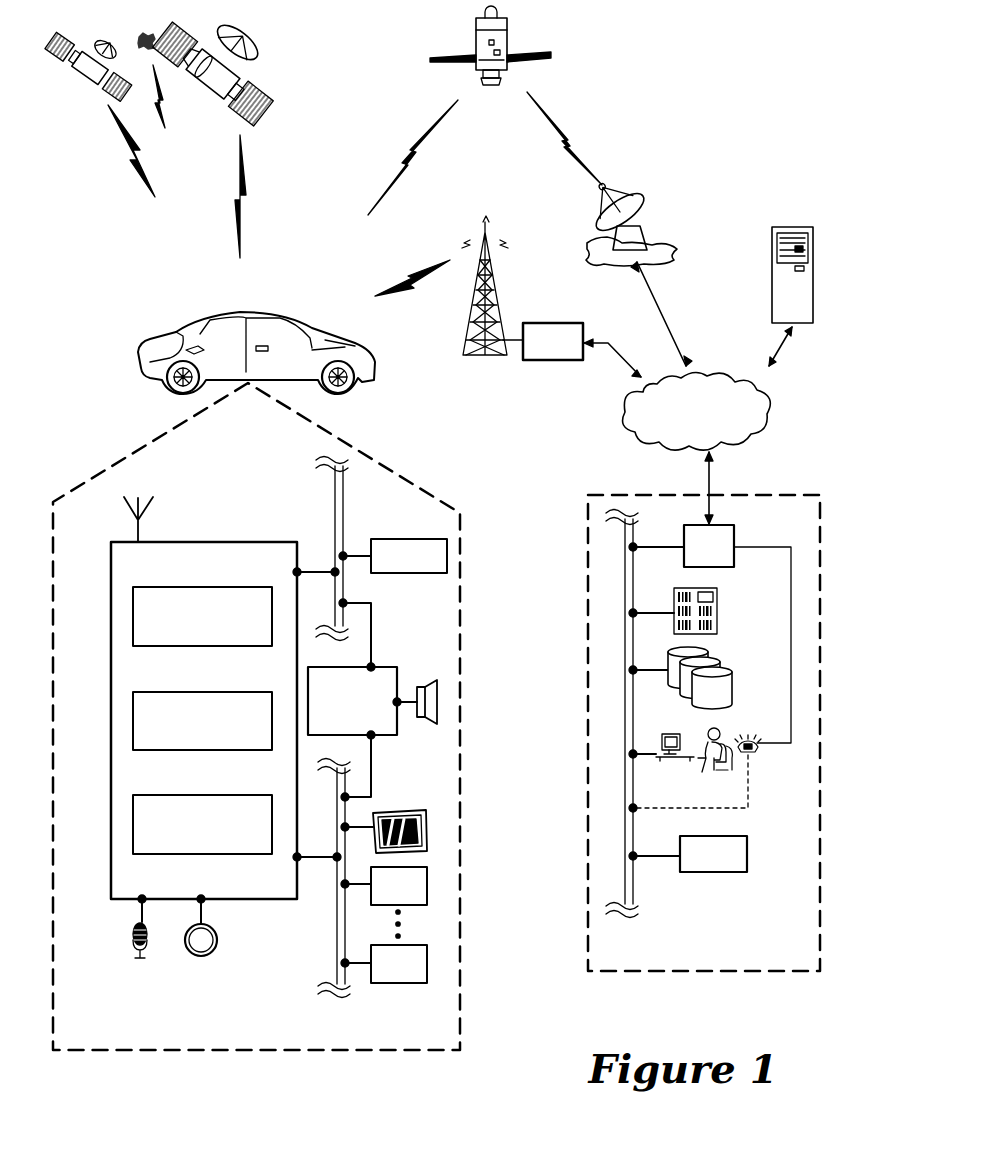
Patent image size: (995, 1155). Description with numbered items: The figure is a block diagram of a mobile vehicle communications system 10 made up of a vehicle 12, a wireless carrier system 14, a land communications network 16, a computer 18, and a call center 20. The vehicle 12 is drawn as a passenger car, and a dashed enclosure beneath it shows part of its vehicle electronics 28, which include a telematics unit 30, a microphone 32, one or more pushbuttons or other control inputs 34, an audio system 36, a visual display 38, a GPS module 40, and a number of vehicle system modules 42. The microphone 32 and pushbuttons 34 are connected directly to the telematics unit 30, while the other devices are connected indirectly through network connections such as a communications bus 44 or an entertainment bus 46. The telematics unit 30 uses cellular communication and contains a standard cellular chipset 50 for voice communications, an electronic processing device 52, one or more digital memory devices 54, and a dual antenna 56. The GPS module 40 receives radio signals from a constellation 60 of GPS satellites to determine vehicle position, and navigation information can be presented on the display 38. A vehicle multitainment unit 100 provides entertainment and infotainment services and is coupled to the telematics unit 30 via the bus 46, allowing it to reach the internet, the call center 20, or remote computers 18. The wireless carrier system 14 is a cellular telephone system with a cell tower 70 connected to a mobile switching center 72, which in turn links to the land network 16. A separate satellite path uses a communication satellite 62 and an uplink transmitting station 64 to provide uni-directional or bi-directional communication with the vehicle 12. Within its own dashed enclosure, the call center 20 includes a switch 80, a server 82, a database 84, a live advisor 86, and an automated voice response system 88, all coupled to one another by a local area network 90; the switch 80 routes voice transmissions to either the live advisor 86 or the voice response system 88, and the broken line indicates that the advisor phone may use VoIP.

The mobile vehicle communications system 10 is at (727, 46).
The vehicle 12 is at (140, 362).
The wireless carrier system 14 is at (486, 374).
The land communications network 16 is at (697, 411).
The computer 18 is at (813, 286).
The call center 20 is at (693, 971).
The vehicle electronics 28 is at (250, 1050).
The telematics unit 30 is at (204, 701).
The microphone 32 is at (131, 938).
The pushbuttons or other control inputs 34 is at (218, 937).
The audio system 36 is at (372, 701).
The visual display 38 is at (398, 811).
The GPS module 40 is at (384, 886).
The vehicle system modules 42 is at (384, 964).
The communications bus 44 is at (335, 928).
The entertainment bus 46 is at (343, 517).
The cellular chipset 50 is at (202, 616).
The electronic processing device 52 is at (202, 721).
The digital memory devices 54 is at (202, 824).
The dual antenna 56 is at (135, 530).
The constellation of GPS satellites 60 is at (299, 100).
The communication satellite 62 is at (507, 25).
The uplink transmitting station 64 is at (652, 232).
The cell tower 70 is at (495, 286).
The mobile switching center 72 is at (553, 341).
The switch 80 is at (710, 634).
The server 82 is at (717, 608).
The database 84 is at (734, 684).
The live advisor 86 is at (692, 775).
The automated voice response system 88 is at (688, 854).
The local area network 90 is at (636, 893).
The vehicle multitainment unit 100 is at (409, 556).